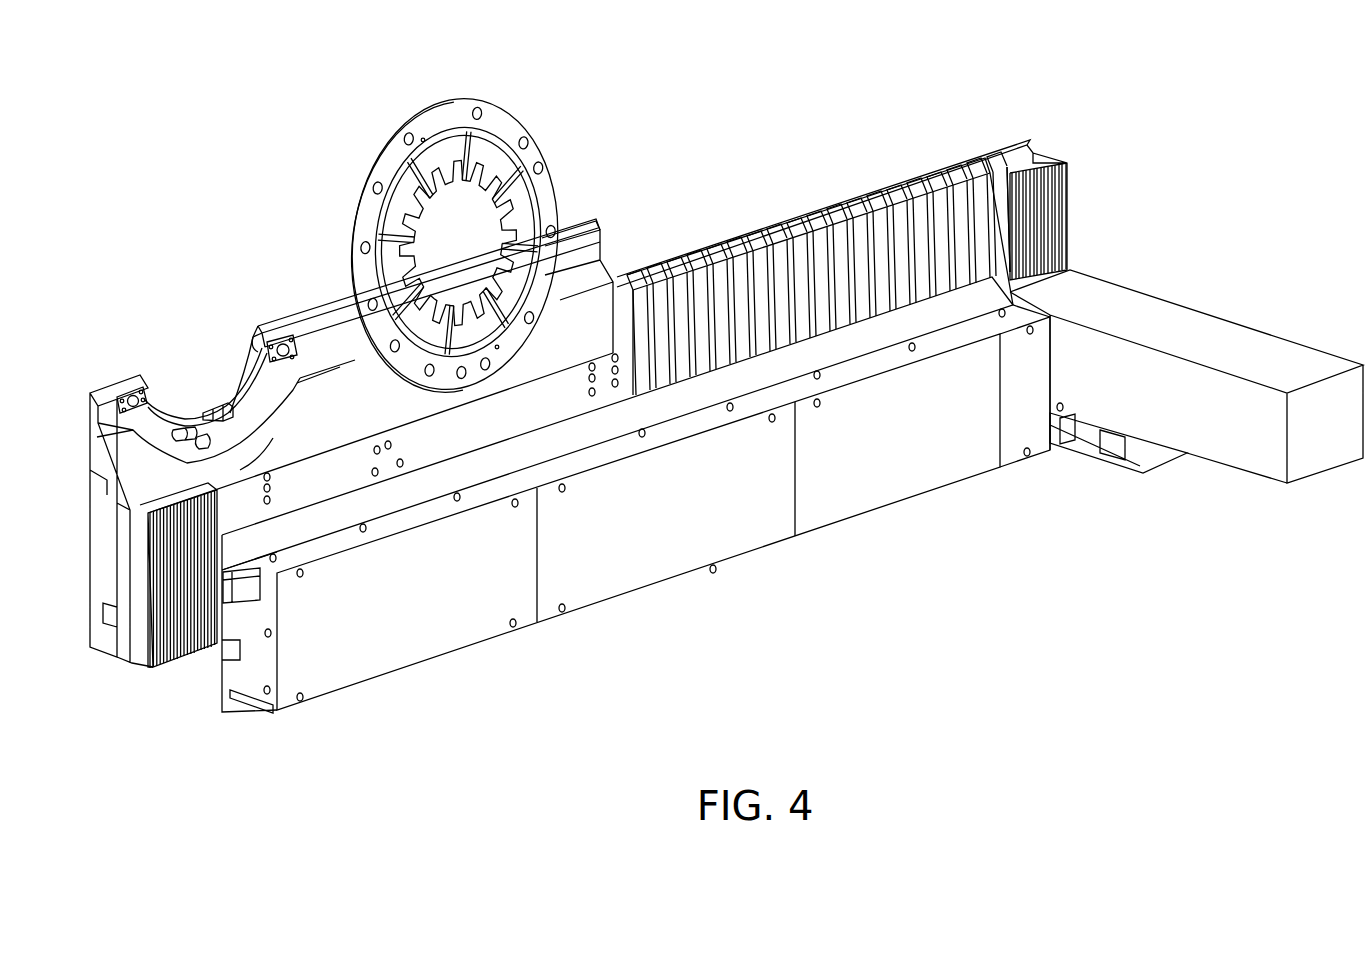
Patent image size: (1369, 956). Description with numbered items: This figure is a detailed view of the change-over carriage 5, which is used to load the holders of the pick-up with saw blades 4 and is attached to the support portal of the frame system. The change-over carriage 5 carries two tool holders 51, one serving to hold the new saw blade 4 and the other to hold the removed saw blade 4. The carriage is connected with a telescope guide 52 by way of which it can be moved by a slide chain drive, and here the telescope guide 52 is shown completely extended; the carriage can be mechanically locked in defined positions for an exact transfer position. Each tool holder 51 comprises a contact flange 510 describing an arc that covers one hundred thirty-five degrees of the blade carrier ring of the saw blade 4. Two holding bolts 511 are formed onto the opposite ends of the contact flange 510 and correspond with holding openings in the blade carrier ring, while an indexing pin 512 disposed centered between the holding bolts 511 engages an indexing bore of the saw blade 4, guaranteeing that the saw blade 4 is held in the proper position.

The saw blade 4 is at (513, 122).
The change-over carriage 5 is at (88, 470).
The tool holder 51 is at (195, 417).
The contact flange 510 is at (273, 438).
The holding bolt 511 is at (283, 340).
The indexing pin 512 is at (208, 445).
The telescope guide 52 is at (217, 643).